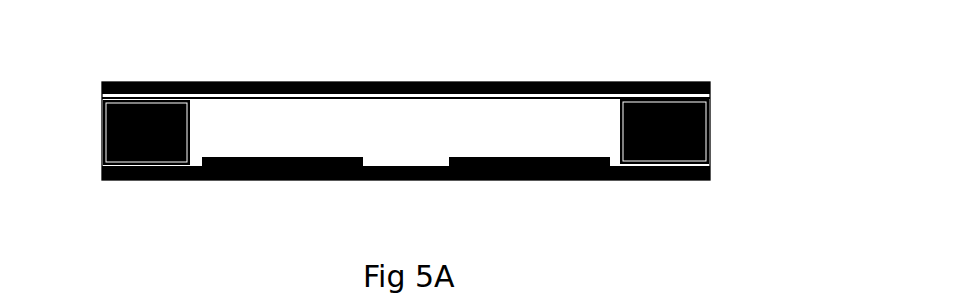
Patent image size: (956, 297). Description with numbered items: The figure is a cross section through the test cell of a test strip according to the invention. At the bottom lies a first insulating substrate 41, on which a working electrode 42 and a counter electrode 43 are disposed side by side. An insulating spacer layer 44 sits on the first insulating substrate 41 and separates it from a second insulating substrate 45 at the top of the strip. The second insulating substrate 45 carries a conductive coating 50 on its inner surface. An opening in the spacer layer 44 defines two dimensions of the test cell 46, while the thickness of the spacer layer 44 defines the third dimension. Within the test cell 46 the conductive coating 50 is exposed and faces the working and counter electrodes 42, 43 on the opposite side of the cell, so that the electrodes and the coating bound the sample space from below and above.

The first insulating substrate 41 is at (695, 168).
The working electrode 42 is at (317, 163).
The counter electrode 43 is at (502, 163).
The insulating spacer layer 44 is at (107, 126).
The second insulating substrate 45 is at (700, 85).
The test cell 46 is at (405, 128).
The conductive coating 50 is at (238, 97).